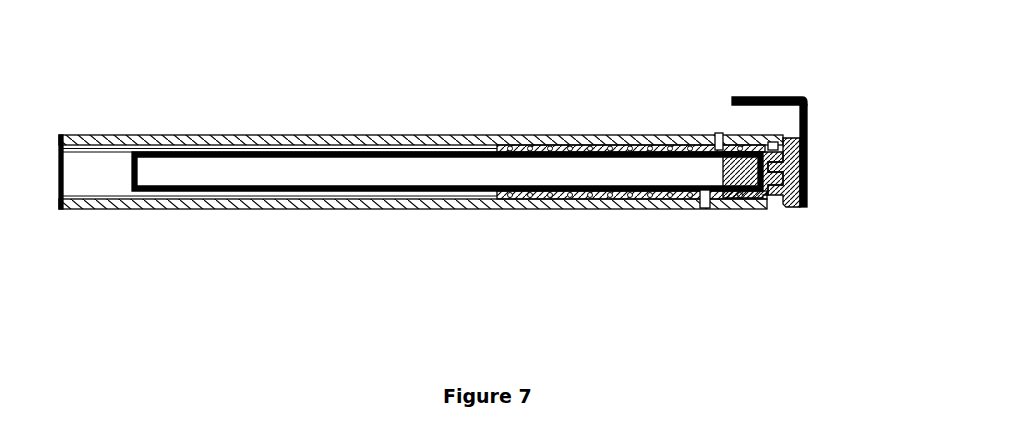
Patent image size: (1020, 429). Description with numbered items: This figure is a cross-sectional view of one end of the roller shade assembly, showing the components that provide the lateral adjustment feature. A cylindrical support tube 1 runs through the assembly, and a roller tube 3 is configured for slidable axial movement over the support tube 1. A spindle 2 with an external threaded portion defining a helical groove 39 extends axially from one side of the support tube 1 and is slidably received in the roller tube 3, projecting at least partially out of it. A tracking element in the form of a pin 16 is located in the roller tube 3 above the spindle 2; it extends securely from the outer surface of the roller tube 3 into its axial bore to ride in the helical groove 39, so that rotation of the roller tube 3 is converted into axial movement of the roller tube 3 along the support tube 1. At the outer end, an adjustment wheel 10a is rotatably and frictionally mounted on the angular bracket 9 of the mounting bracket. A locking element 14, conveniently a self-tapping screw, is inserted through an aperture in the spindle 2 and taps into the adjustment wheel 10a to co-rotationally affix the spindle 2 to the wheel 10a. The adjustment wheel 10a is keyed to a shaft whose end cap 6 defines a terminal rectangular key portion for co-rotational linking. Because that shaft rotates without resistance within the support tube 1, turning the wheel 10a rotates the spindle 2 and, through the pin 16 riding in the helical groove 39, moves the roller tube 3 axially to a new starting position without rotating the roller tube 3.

The support tube 1 is at (102, 135).
The spindle 2 is at (643, 150).
The roller tube 3 is at (595, 134).
The end cap 6 is at (808, 190).
The angular bracket 9 is at (785, 98).
The adjustment wheel 10a is at (795, 148).
The locking element 14 is at (771, 142).
The pin 16 is at (718, 135).
The helical groove 39 is at (703, 207).